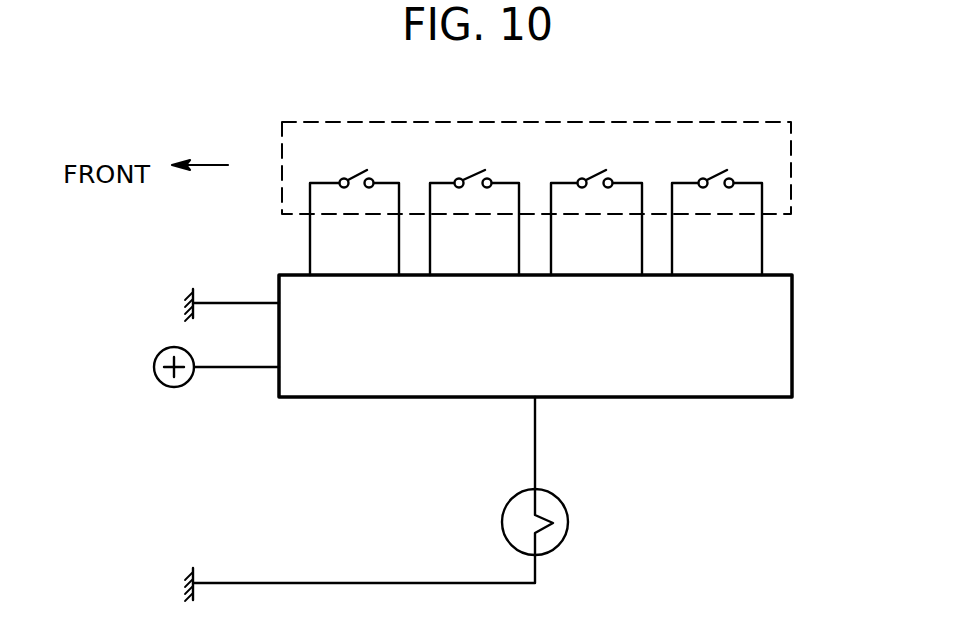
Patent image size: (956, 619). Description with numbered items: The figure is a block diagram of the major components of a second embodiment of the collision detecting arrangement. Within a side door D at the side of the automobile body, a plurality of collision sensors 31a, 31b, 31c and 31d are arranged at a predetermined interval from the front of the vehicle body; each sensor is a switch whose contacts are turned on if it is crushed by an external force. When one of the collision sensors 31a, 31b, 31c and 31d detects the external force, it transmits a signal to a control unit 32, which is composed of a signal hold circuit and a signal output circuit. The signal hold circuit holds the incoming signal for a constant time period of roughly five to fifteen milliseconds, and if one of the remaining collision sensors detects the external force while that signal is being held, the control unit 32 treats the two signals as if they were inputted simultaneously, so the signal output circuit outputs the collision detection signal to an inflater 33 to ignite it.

The collision sensor 31a is at (369, 168).
The collision sensor 31b is at (487, 168).
The collision sensor 31c is at (608, 168).
The collision sensor 31d is at (729, 168).
The control unit 32 is at (785, 341).
The inflater 33 is at (568, 518).
The side door D is at (791, 128).